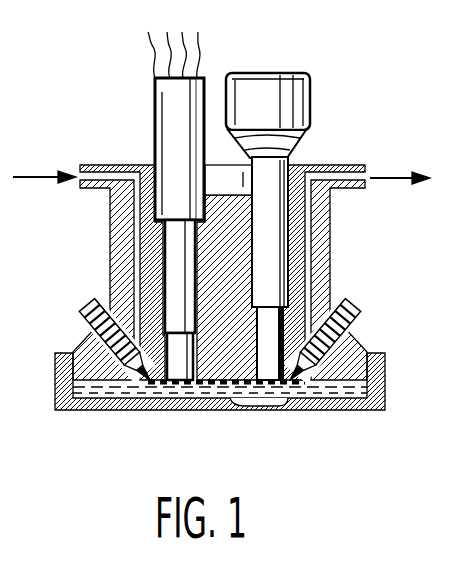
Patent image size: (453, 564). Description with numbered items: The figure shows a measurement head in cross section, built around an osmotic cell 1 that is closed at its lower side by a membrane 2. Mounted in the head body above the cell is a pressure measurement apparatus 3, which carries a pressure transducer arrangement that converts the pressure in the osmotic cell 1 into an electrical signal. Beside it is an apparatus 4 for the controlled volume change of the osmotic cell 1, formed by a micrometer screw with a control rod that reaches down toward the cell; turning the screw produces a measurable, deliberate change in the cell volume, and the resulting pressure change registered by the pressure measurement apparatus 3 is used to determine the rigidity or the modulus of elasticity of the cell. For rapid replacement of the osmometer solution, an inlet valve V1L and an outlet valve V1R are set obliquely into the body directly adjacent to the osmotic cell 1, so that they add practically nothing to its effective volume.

The osmotic cell 1 is at (282, 384).
The membrane 2 is at (229, 404).
The pressure measurement apparatus 3 is at (172, 115).
The apparatus for the controlled volume change of the osmotic cell 4 is at (282, 91).
The inlet valve V1L is at (80, 327).
The outlet valve V1R is at (358, 298).